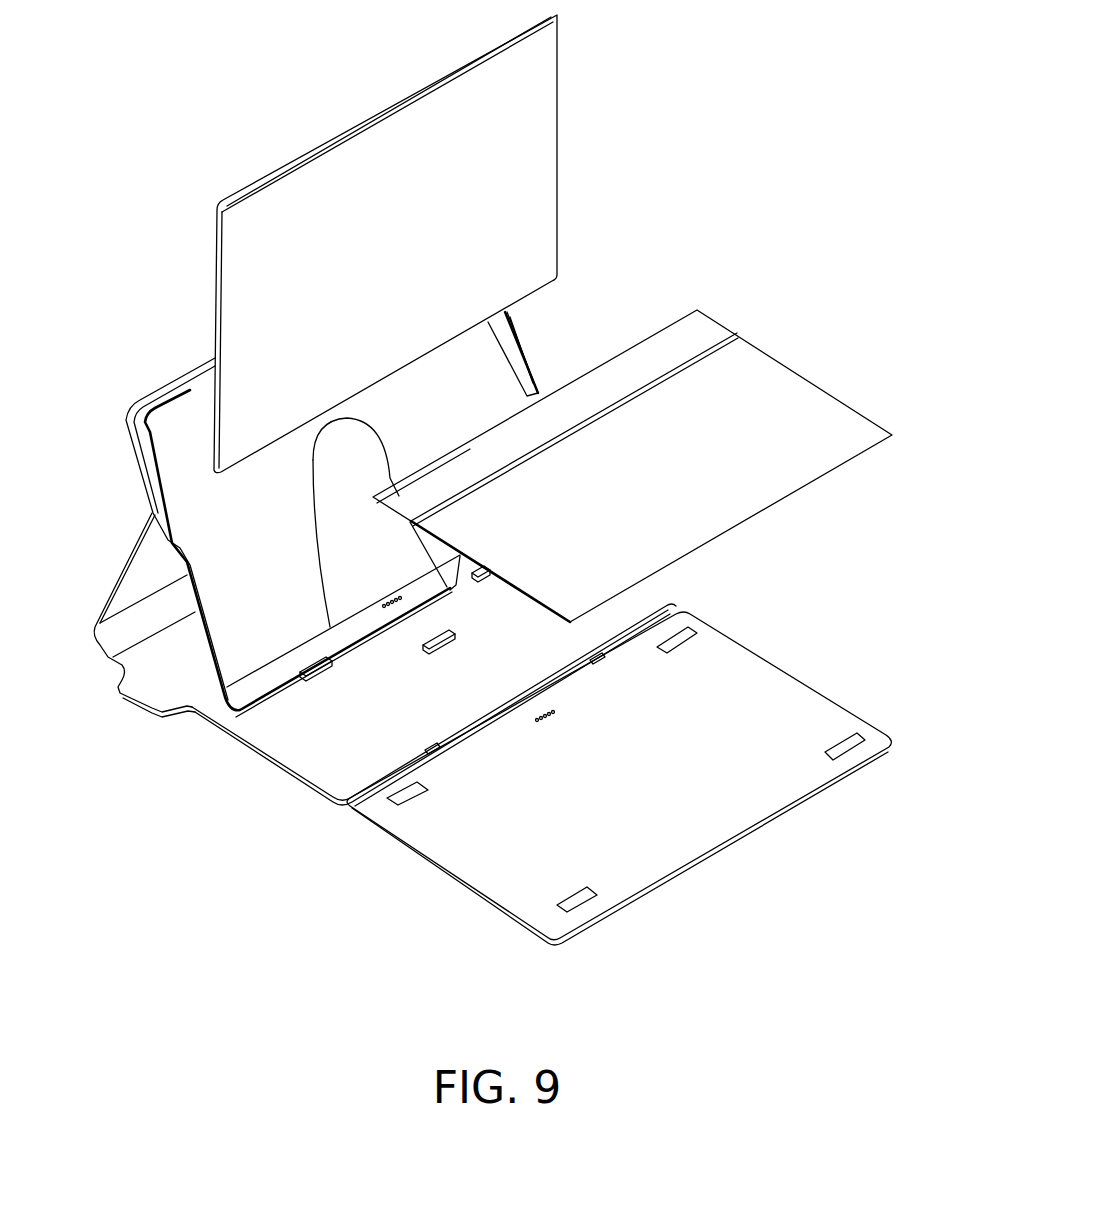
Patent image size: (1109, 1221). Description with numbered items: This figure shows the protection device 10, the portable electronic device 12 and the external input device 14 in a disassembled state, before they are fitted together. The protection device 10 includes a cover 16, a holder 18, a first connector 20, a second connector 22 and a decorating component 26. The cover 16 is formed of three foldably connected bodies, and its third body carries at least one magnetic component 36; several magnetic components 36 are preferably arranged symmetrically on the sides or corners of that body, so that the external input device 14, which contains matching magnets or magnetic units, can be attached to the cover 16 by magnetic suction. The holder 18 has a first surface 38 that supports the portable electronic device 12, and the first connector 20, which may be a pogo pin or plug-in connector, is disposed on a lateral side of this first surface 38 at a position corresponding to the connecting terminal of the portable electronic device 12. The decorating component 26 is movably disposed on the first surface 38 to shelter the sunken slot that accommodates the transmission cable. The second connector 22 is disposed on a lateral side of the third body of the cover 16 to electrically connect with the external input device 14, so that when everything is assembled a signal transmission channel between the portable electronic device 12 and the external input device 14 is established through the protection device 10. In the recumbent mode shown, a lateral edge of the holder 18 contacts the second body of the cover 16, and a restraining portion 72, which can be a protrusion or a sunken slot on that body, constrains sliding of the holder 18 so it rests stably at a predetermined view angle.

The protection device 10 is at (108, 766).
The portable electronic device 12 is at (515, 153).
The external input device 14 is at (753, 378).
The cover 16 is at (150, 573).
The holder 18 is at (238, 593).
The first connector 20 is at (382, 630).
The second connector 22 is at (540, 723).
The decorating component 26 is at (350, 590).
The magnetic component 36 is at (408, 793).
The first surface 38 is at (483, 370).
The restraining portion 72 is at (300, 680).